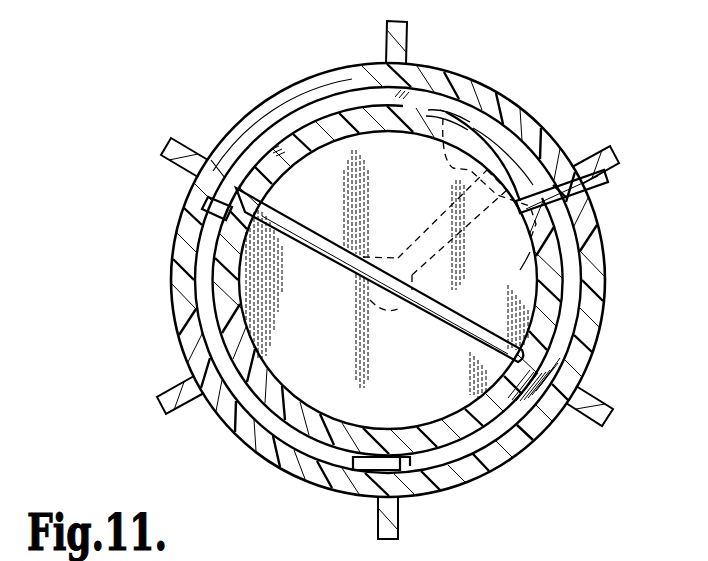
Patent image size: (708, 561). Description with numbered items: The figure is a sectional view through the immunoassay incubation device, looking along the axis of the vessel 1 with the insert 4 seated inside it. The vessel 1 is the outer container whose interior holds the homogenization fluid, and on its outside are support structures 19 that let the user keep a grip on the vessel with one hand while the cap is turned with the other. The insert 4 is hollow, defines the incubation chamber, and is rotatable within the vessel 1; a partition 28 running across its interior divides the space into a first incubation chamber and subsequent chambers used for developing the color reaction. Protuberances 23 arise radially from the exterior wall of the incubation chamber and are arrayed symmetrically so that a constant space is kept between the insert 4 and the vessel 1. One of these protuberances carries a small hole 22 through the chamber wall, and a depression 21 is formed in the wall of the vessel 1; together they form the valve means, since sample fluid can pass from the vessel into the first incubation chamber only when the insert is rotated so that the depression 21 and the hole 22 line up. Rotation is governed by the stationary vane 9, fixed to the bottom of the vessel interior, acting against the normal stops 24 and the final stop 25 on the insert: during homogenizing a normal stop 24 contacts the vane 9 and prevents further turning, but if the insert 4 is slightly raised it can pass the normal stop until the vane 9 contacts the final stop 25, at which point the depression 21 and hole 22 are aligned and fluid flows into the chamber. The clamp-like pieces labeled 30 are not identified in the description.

The vessel 1 is at (227, 427).
The insert 4 is at (593, 337).
The stationary vane 9 is at (420, 198).
The support structures 19 is at (162, 410).
The depression 21 is at (583, 190).
The small hole 22 is at (560, 170).
The protuberances 23 is at (215, 165).
The normal stops 24 is at (462, 117).
The final stop 25 is at (547, 265).
The partition 28 is at (228, 266).
The clamp block 30 is at (200, 206).